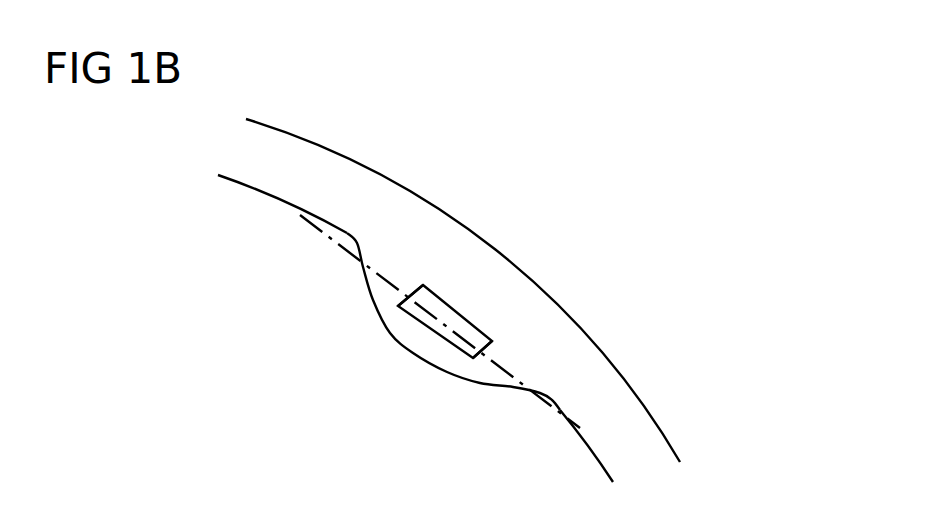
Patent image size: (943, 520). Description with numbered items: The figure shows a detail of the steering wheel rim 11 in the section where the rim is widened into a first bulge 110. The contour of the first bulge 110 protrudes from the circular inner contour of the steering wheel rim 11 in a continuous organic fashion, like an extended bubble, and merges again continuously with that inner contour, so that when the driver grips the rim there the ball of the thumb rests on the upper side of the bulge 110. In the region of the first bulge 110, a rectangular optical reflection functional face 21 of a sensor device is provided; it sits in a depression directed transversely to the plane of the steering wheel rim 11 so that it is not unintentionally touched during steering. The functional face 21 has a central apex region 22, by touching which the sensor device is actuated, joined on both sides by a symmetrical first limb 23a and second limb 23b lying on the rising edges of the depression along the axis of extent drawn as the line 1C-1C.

The steering wheel rim 11 is at (313, 178).
The first bulge 110 is at (435, 367).
The optical reflection functional face 21 is at (445, 304).
The apex region 22 is at (452, 333).
The first limb 23a is at (415, 307).
The second limb 23b is at (468, 347).
The line 1C- 1C is at (306, 249).